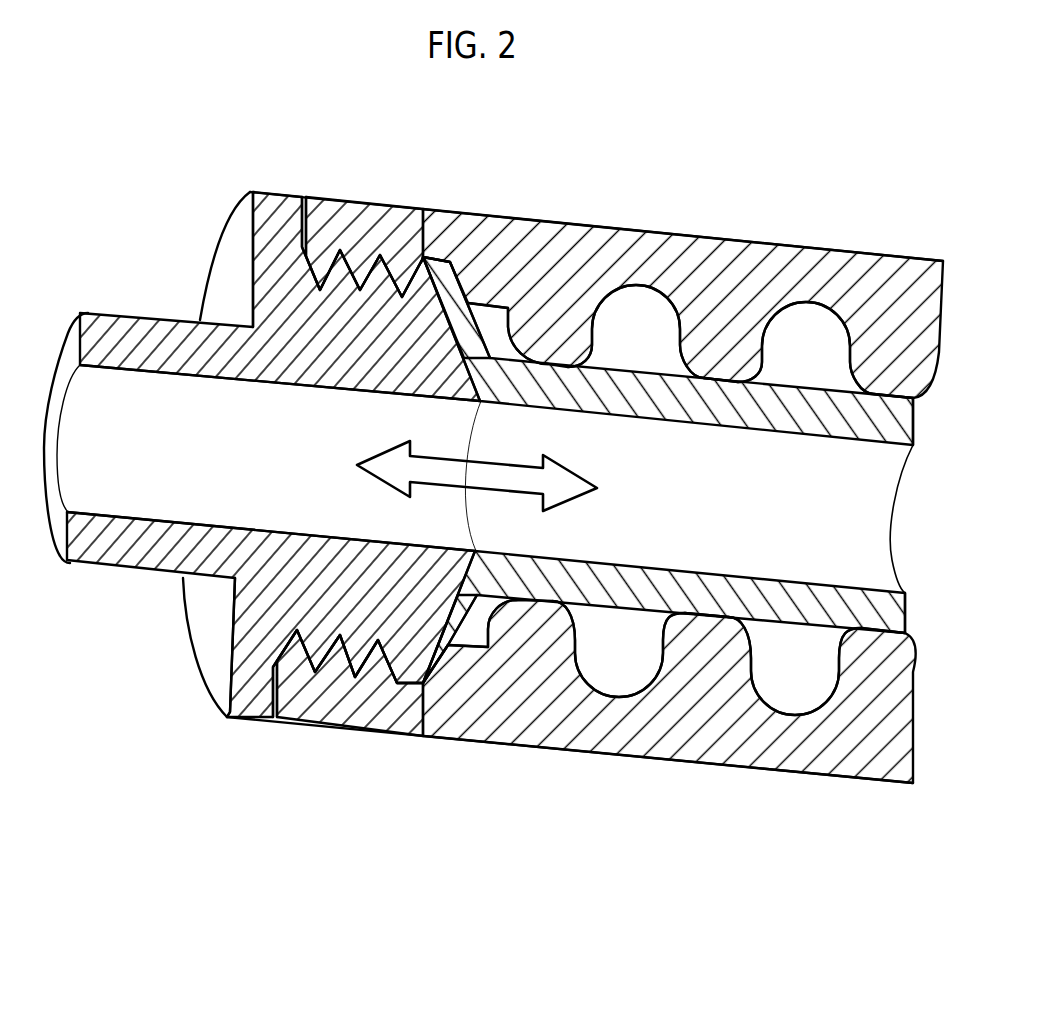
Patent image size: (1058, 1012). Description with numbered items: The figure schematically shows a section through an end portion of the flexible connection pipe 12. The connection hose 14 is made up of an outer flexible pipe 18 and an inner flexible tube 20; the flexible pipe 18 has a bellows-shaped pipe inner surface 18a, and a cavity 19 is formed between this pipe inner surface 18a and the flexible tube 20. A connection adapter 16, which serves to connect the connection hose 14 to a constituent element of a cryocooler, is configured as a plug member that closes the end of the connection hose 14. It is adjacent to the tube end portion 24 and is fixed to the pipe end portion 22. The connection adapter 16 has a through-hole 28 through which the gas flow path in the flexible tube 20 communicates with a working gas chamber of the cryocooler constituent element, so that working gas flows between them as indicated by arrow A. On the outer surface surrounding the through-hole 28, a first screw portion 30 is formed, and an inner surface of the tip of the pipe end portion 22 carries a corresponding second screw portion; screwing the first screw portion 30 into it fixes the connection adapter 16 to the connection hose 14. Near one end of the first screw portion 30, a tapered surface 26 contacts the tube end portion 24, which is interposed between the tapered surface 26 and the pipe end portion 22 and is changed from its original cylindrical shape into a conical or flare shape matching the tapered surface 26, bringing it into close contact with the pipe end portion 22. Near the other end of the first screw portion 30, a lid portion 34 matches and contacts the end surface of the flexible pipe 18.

The flexible connection pipe 12 is at (518, 1009).
The connection hose 14 is at (960, 150).
The connection adapter 16 is at (120, 303).
The flexible pipe 18 is at (869, 247).
The pipe inner surface 18a is at (772, 334).
The cavity 19 is at (640, 322).
The flexible tube 20 is at (898, 396).
The pipe end portion 22 is at (430, 232).
The tube end portion 24 is at (508, 322).
The tapered surface 26 is at (482, 278).
The through-hole 28 is at (180, 521).
The first screw portion 30 is at (358, 248).
The lid portion 34 is at (213, 642).
The arrow A is at (512, 495).